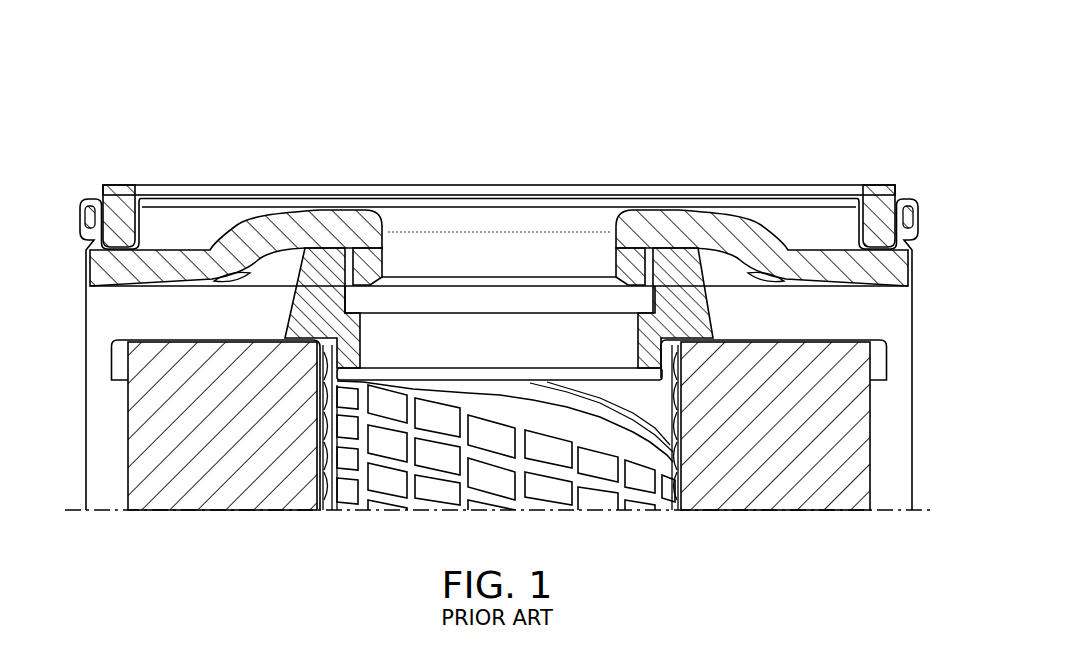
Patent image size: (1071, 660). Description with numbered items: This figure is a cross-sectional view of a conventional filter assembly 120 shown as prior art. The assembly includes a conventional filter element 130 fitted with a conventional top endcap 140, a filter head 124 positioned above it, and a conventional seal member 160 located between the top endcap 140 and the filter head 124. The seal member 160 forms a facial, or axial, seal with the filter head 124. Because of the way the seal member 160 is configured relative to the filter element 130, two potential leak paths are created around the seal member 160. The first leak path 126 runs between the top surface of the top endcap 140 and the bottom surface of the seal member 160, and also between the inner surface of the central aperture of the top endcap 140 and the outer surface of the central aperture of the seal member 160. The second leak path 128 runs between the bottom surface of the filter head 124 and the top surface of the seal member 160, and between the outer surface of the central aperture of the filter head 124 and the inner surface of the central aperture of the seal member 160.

The filter assembly 120 is at (796, 70).
The filter head 124 is at (764, 213).
The first leak path 126 is at (692, 343).
The second leak path 128 is at (663, 247).
The filter element 130 is at (880, 330).
The top endcap 140 is at (792, 337).
The seal member 160 is at (290, 298).